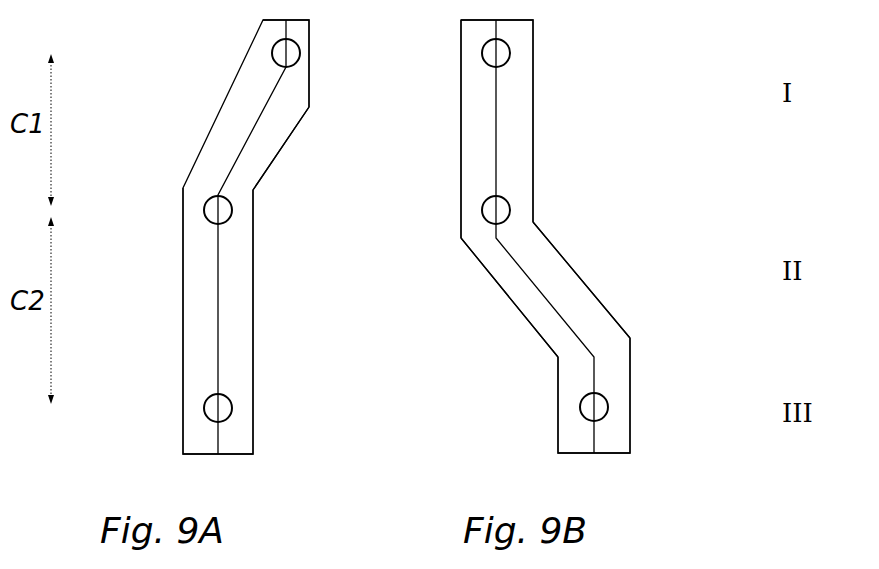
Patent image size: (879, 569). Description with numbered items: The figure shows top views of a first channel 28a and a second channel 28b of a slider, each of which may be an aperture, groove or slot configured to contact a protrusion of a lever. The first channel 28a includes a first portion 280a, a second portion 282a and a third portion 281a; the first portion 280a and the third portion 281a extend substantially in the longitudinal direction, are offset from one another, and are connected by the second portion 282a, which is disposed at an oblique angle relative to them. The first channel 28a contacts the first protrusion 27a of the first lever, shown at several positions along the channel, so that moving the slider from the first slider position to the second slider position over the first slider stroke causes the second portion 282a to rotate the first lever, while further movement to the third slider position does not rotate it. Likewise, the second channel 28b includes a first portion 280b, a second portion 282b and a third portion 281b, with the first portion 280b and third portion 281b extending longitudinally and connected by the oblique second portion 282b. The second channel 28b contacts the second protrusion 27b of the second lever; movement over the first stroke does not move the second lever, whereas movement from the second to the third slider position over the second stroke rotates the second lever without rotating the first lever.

In FIG. 9A, the first protrusion 27a is at (272, 53).
In FIG. 9A, the first channel 28a is at (182, 292).
In FIG. 9A, the first portion 280a is at (310, 33).
In FIG. 9A, the third portion 281a is at (254, 360).
In FIG. 9A, the second portion 282a is at (273, 163).
In FIG. 9B, the second protrusion 27b is at (490, 58).
In FIG. 9B, the second channel 28b is at (535, 153).
In FIG. 9B, the first portion 280b is at (535, 50).
In FIG. 9B, the third portion 281b is at (632, 370).
In FIG. 9B, the second portion 282b is at (583, 278).